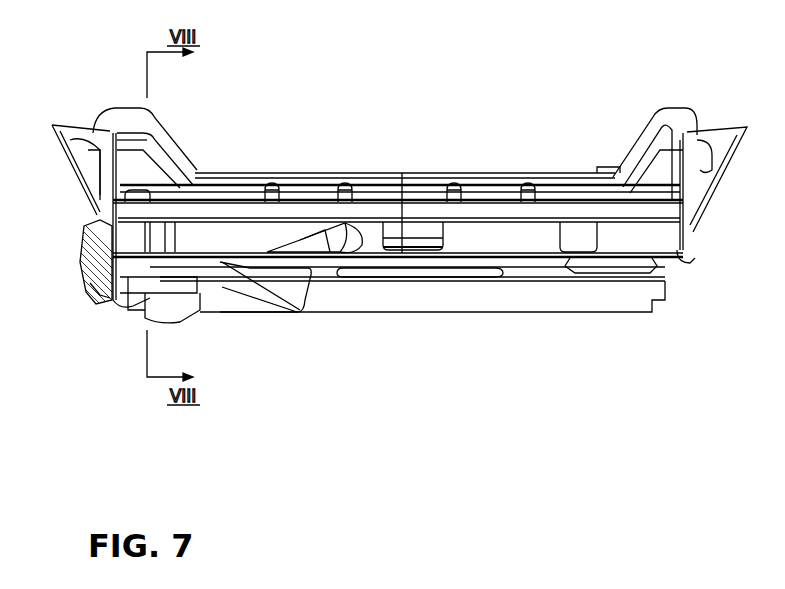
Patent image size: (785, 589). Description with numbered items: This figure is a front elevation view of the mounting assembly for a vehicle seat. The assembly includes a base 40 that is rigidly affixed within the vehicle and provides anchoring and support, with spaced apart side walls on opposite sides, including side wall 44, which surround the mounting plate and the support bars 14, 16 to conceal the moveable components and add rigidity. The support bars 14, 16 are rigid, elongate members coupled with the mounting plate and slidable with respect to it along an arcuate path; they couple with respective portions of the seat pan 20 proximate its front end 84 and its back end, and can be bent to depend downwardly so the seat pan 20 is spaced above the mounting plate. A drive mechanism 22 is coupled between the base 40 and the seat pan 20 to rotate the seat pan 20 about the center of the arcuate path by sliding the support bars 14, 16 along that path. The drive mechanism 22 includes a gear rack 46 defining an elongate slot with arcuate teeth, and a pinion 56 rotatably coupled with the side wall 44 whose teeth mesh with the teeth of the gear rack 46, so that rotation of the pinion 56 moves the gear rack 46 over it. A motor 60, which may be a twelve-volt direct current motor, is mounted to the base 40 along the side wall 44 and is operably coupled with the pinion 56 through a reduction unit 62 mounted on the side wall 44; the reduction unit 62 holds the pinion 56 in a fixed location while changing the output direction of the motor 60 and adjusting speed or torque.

The support bar 14 is at (600, 187).
The support bar 16 is at (205, 233).
The seat pan 20 is at (680, 112).
The drive mechanism 22 is at (68, 269).
The base 40 is at (383, 297).
The side wall 44 is at (110, 193).
The gear rack 46 is at (133, 258).
The pinion 56 is at (147, 253).
The motor 60 is at (80, 242).
The reduction unit 62 is at (90, 283).
The front end 84 is at (727, 127).